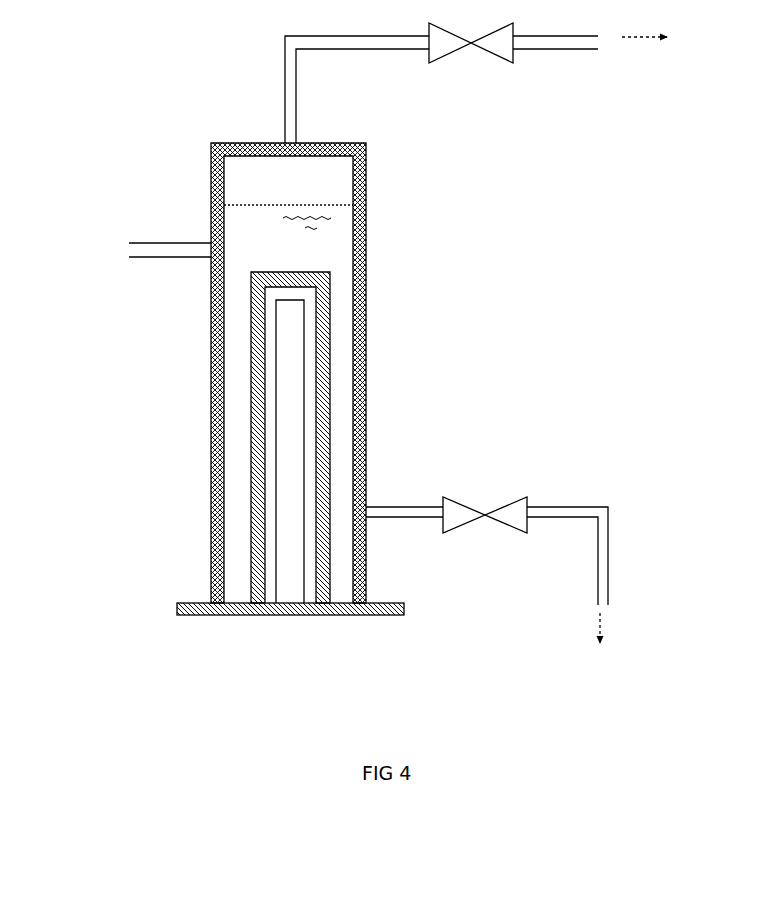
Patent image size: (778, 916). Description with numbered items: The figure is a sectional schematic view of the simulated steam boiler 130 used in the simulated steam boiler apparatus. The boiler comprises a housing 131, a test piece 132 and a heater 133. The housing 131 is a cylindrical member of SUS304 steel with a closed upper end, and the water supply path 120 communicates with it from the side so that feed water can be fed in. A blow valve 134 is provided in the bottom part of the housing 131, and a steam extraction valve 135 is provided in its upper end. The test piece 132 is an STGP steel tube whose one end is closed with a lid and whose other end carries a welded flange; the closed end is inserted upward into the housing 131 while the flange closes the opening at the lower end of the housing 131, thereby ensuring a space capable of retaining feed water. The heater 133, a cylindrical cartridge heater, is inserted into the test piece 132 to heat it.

The water supply path 120 is at (176, 243).
The simulated steam boiler 130 is at (182, 381).
The housing 131 is at (365, 320).
The test piece 132 is at (252, 438).
The heater 133 is at (293, 393).
The blow valve 134 is at (470, 507).
The steam extraction valve 135 is at (470, 48).